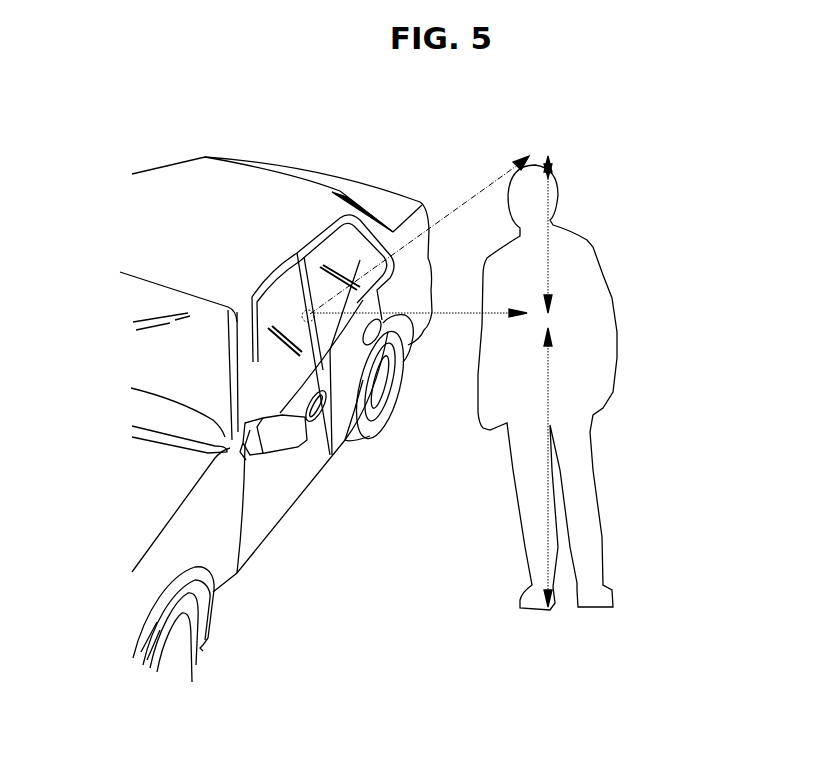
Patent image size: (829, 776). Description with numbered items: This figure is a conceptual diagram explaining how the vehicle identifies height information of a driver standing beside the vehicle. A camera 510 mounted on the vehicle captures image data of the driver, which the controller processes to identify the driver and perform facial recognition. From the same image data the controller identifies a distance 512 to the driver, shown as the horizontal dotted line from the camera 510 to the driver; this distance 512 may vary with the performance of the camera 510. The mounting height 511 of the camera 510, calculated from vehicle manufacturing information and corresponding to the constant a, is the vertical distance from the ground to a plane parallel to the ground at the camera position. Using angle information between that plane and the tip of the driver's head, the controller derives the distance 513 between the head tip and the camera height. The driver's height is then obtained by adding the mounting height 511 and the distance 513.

The camera 510 is at (309, 309).
The mounting height of the camera 511 is at (663, 448).
The distance to the driver 512 is at (438, 385).
The distance between the tip of the head of the driver and the height of the camera 513 is at (637, 211).